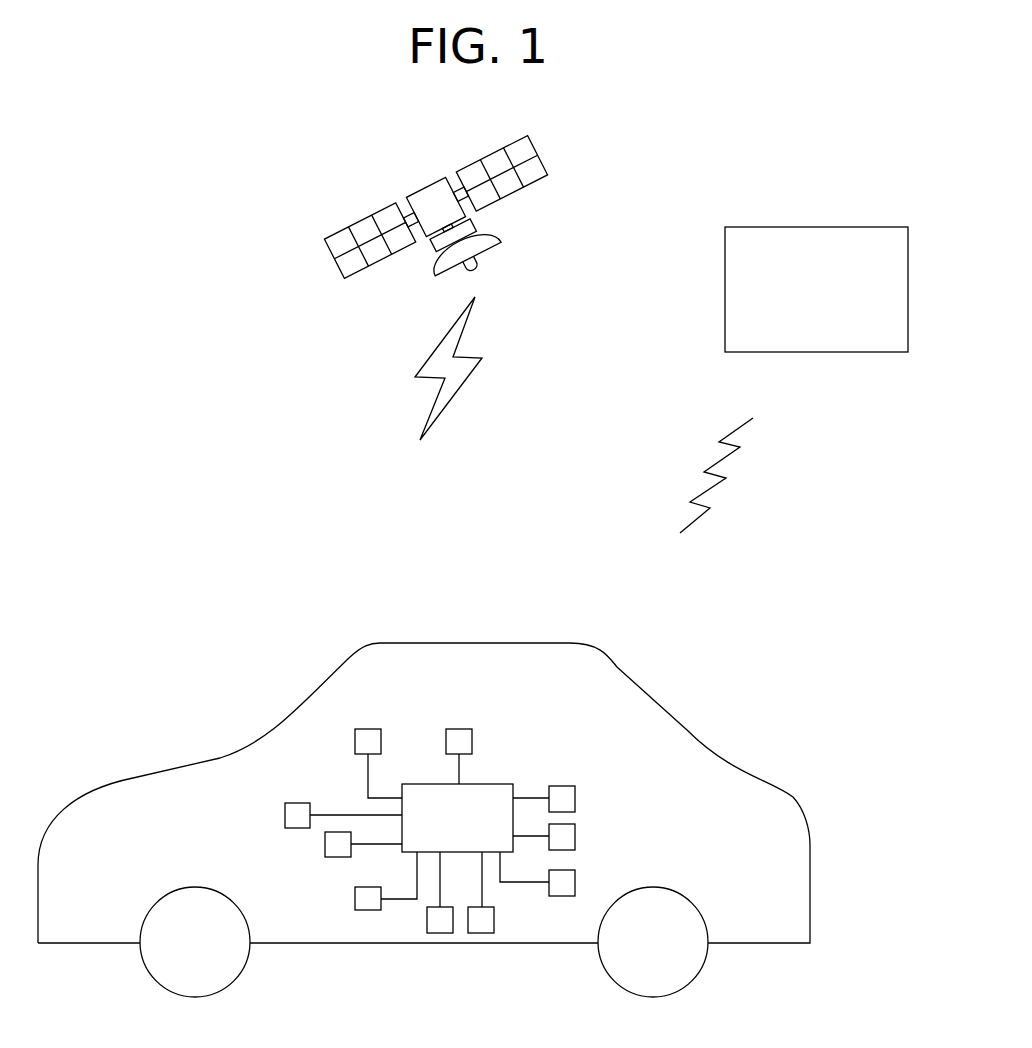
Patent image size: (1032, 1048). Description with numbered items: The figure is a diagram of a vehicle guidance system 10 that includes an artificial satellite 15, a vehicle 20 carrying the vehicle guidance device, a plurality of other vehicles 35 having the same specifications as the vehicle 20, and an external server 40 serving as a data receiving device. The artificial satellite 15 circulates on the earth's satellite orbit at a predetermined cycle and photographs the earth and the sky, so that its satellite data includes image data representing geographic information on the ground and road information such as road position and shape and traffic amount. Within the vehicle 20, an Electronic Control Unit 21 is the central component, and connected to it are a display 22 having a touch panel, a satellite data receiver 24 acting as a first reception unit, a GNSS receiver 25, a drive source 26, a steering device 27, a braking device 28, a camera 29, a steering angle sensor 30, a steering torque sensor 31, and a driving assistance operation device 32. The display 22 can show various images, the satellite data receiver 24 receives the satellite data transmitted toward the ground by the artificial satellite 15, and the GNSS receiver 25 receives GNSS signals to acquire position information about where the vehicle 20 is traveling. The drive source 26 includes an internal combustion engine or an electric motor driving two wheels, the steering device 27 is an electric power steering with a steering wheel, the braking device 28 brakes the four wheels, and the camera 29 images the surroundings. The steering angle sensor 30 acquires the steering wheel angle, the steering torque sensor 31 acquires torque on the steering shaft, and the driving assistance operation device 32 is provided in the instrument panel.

The vehicle guidance system 10 is at (226, 477).
The artificial satellite 15 is at (428, 190).
The vehicle 20 is at (678, 750).
The vehicles 35 is at (424, 820).
The Electronic Control Unit 21 is at (478, 784).
The display 22 is at (300, 803).
The satellite data receiver 24 is at (323, 848).
The GNSS receiver 25 is at (372, 729).
The drive source 26 is at (462, 729).
The steering device 27 is at (575, 793).
The braking device 28 is at (575, 833).
The camera 29 is at (575, 882).
The steering angle sensor 30 is at (480, 933).
The steering torque sensor 31 is at (440, 933).
The driving assistance operation device 32 is at (355, 897).
The external server 40 is at (792, 227).